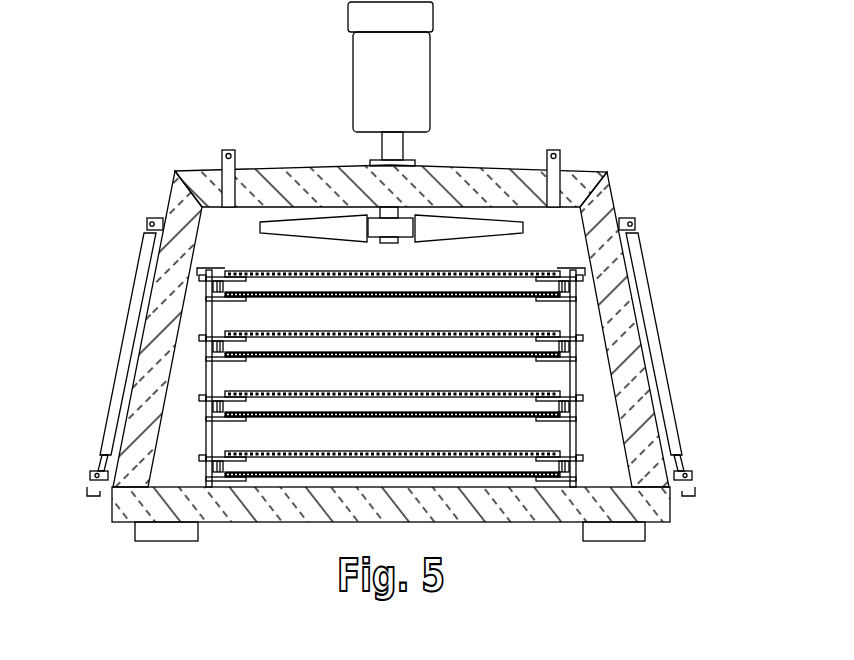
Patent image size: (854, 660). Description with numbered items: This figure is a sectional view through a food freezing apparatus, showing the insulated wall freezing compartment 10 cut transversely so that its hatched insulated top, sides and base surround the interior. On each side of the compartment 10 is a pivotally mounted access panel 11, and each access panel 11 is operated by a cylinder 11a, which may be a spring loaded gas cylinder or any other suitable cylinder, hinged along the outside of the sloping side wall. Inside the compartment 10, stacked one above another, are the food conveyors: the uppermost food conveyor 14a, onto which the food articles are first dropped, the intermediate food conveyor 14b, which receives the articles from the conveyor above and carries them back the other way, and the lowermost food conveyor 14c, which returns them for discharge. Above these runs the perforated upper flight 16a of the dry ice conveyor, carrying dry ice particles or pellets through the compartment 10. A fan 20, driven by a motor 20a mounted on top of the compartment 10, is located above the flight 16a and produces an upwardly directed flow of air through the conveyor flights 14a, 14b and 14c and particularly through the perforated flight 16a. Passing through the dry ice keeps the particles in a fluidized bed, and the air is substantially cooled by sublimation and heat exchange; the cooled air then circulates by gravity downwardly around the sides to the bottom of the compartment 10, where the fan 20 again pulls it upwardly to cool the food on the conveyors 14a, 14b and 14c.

The insulated wall freezing compartment 10 is at (394, 271).
The access panel 11 is at (172, 190).
The cylinder 11a is at (134, 292).
The uppermost food conveyor 14a is at (377, 331).
The food conveyor 14b is at (380, 392).
The lowermost food conveyor 14c is at (380, 451).
The upper flight 16a is at (286, 270).
The fan 20 is at (497, 231).
The motor 20a is at (413, 75).